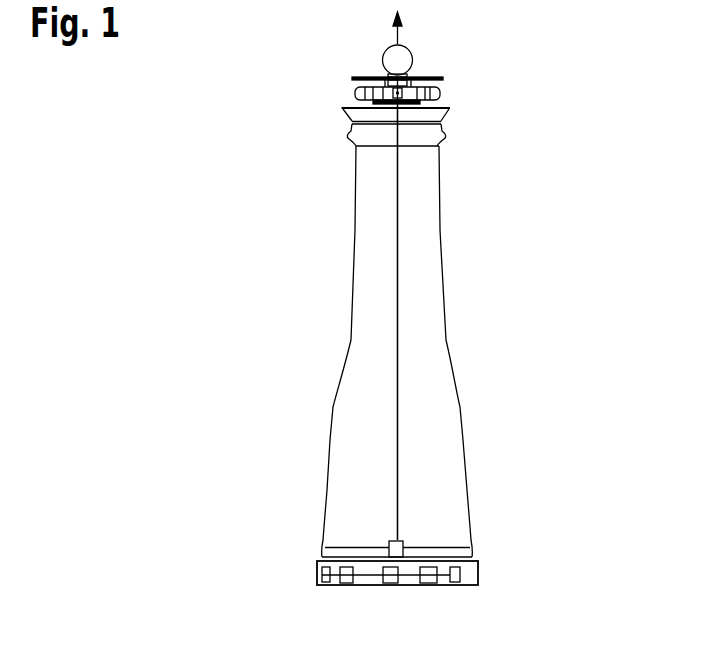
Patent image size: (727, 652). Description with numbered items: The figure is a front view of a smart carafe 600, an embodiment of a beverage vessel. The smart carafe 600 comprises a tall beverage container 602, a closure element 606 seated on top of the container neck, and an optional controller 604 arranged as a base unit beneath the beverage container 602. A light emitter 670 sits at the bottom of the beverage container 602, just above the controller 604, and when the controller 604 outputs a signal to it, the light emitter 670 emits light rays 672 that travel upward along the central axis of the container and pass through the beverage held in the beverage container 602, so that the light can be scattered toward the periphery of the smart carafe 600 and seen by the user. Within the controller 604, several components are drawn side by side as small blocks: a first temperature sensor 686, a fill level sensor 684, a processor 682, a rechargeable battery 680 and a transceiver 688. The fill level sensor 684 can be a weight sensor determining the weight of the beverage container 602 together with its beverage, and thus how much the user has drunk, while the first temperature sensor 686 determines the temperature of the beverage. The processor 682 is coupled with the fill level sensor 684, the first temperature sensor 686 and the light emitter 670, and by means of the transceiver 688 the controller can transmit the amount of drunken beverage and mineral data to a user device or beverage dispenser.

The smart carafe 600 is at (556, 234).
The closure element 606 is at (460, 50).
The beverage container 602 is at (443, 500).
The light rays 672 is at (398, 437).
The light emitter 670 is at (400, 548).
The controller 604 is at (478, 571).
The first temperature sensor 686 is at (322, 571).
The fill level sensor 684 is at (345, 583).
The processor 682 is at (390, 583).
The rechargeable battery 680 is at (427, 583).
The transceiver 688 is at (455, 584).